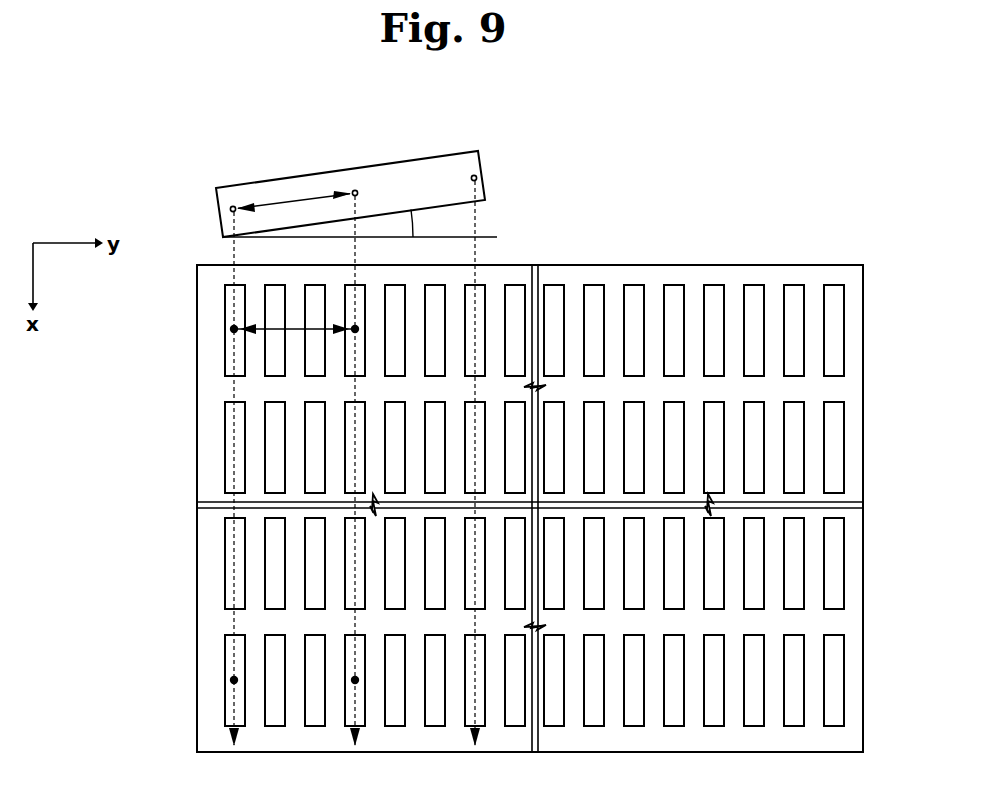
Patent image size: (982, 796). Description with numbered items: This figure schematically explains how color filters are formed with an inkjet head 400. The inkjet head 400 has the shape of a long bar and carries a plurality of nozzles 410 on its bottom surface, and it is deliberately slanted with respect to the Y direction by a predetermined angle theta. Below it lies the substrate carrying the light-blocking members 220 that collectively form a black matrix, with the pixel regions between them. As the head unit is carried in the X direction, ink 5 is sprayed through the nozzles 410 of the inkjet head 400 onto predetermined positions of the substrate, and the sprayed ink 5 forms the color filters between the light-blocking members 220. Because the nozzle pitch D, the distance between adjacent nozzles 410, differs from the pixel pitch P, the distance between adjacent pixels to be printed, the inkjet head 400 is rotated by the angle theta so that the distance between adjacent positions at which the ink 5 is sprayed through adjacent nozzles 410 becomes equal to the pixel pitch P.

The ink 5 is at (231, 329).
The light-blocking members 220 is at (202, 452).
The inkjet head 400 is at (345, 170).
The nozzles 410 is at (219, 208).